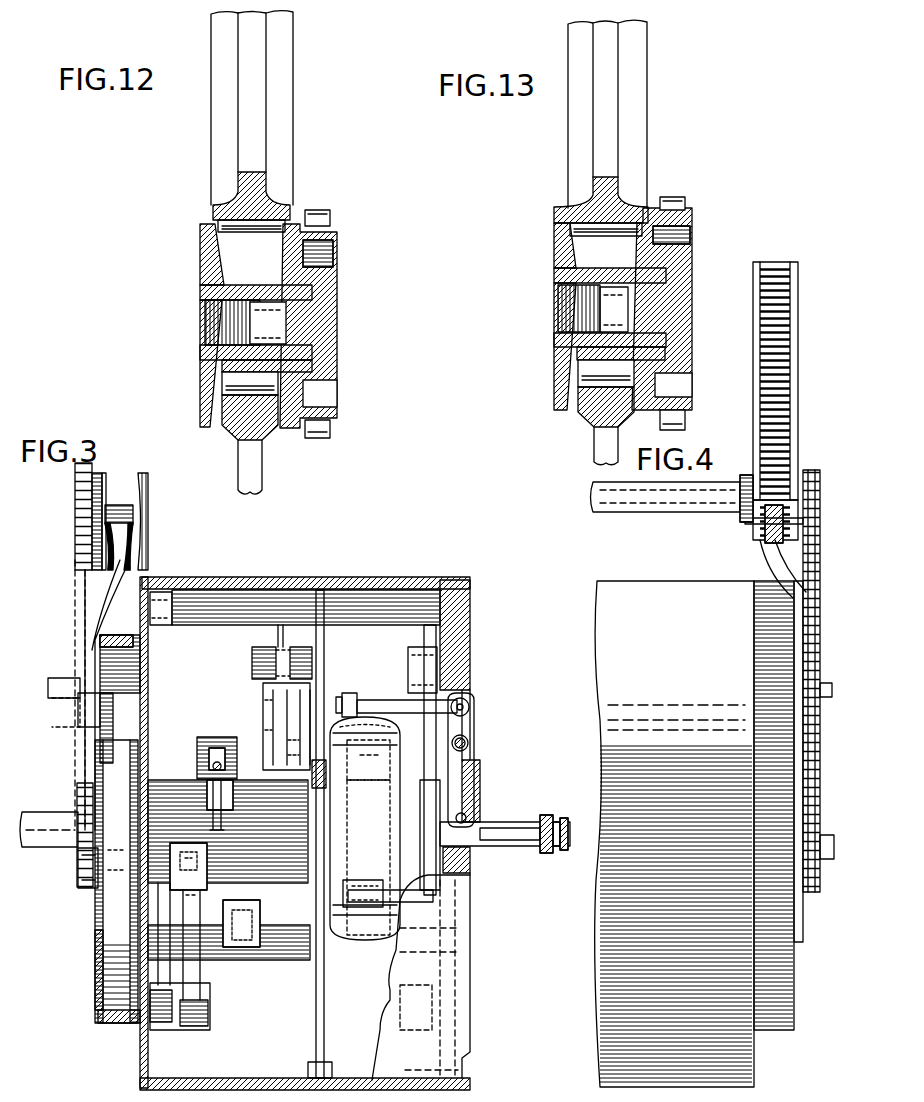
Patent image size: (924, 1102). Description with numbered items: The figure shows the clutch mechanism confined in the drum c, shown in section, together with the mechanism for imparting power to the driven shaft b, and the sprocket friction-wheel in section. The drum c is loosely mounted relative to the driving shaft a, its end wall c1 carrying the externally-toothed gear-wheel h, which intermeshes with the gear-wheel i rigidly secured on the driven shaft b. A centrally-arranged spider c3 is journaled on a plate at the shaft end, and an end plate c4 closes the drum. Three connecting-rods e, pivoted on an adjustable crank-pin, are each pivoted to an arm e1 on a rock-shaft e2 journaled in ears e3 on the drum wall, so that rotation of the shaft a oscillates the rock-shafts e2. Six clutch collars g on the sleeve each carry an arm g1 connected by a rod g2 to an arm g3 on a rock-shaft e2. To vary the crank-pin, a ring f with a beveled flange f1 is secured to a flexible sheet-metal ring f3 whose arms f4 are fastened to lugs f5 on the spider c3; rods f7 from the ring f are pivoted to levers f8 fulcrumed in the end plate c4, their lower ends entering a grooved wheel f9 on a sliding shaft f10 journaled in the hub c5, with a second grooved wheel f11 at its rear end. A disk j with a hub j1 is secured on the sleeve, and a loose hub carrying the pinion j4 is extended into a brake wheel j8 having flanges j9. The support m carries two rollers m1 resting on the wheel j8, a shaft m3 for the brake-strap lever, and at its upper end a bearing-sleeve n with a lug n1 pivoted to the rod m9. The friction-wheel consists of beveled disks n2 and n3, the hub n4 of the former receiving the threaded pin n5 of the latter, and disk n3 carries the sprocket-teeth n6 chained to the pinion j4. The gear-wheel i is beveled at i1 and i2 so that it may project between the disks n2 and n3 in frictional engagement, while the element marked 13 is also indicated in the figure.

In FIG. 12, the gear-wheel i is at (262, 104).
In FIG. 13, the gear-wheel i is at (618, 120).
In FIG. 4, the gear-wheel i is at (780, 381).
In FIG. 12, the bevel of gear-wheel i1 is at (290, 212).
In FIG. 12, the bevel of gear-wheel i2 is at (213, 212).
In FIG. 12, the bearing-sleeve n is at (256, 285).
In FIG. 13, the bearing-sleeve n is at (610, 314).
In FIG. 4, the bearing-sleeve n is at (790, 458).
In FIG. 3, the bearing-sleeve n is at (112, 506).
In FIG. 12, the outwardly-projecting lug n1 is at (226, 434).
In FIG. 12, the beveled disk n2 is at (220, 325).
In FIG. 13, the beveled disk n2 is at (558, 253).
In FIG. 12, the beveled disk n3 is at (292, 248).
In FIG. 13, the beveled disk n3 is at (638, 248).
In FIG. 12, the internally-threaded hub n4 is at (268, 323).
In FIG. 13, the internally-threaded hub n4 is at (600, 278).
In FIG. 12, the threaded pin n5 is at (205, 325).
In FIG. 13, the threaded pin n5 is at (558, 316).
In FIG. 12, the sprocket-teeth n6 is at (330, 217).
In FIG. 13, the sprocket-teeth n6 is at (680, 207).
In FIG. 4, the sprocket-teeth n6 is at (806, 472).
In FIG. 4, the support m is at (760, 568).
In FIG. 3, the support m is at (85, 657).
In FIG. 13, the rollers m1 is at (580, 411).
In FIG. 3, the rollers m1 is at (100, 732).
In FIG. 4, the shaft m3 is at (813, 688).
In FIG. 12, the connecting-rod m9 is at (256, 468).
In FIG. 13, the connecting-rod m9 is at (596, 448).
In FIG. 4, the connecting-rod m9 is at (768, 520).
In FIG. 4, the driven shaft b is at (665, 506).
In FIG. 4, the pin 13 is at (760, 521).
In FIG. 4, the drum c is at (597, 590).
In FIG. 3, the drum c is at (250, 578).
In FIG. 3, the end wall c1 is at (148, 706).
In FIG. 3, the spider c3 is at (326, 636).
In FIG. 3, the end plate c4 is at (470, 650).
In FIG. 3, the hub c5 is at (508, 824).
In FIG. 3, the connecting-rods e is at (432, 782).
In FIG. 3, the arm e1 is at (423, 636).
In FIG. 3, the rock-shaft e2 is at (210, 625).
In FIG. 3, the ears e3 is at (164, 628).
In FIG. 3, the ring f is at (392, 748).
In FIG. 3, the beveled flange f1 is at (410, 686).
In FIG. 3, the sheet-metal ring f3 is at (366, 806).
In FIG. 3, the radially-projecting arms f4 is at (370, 690).
In FIG. 3, the lugs f5 is at (350, 692).
In FIG. 3, the pins or rods f7 is at (405, 898).
In FIG. 3, the levers f8 is at (472, 724).
In FIG. 3, the grooved wheel f9 is at (470, 822).
In FIG. 3, the sliding shaft f10 is at (480, 850).
In FIG. 3, the grooved wheel f11 is at (556, 852).
In FIG. 3, the clutch members or collars g is at (228, 863).
In FIG. 3, the arm g1 is at (230, 757).
In FIG. 3, the rod g2 is at (296, 710).
In FIG. 3, the arm or lever g3 is at (278, 641).
In FIG. 3, the disk j is at (162, 881).
In FIG. 3, the hub j1 is at (82, 858).
In FIG. 4, the pinion j4 is at (806, 768).
In FIG. 3, the pinion j4 is at (80, 890).
In FIG. 3, the band or brake wheel j8 is at (82, 938).
In FIG. 3, the flanges j9 is at (96, 940).
In FIG. 4, the shaft a is at (805, 884).
In FIG. 3, the shaft a is at (42, 828).
In FIG. 4, the gear-wheel h is at (802, 791).
In FIG. 3, the gear-wheel h is at (104, 1024).